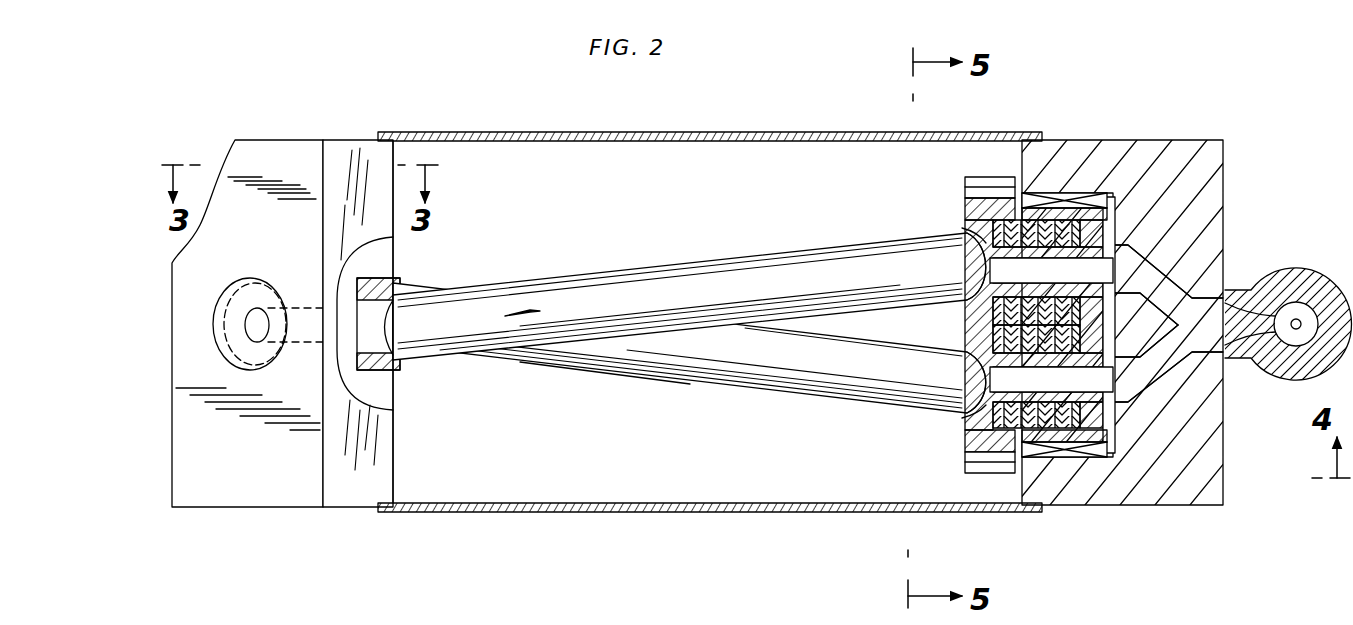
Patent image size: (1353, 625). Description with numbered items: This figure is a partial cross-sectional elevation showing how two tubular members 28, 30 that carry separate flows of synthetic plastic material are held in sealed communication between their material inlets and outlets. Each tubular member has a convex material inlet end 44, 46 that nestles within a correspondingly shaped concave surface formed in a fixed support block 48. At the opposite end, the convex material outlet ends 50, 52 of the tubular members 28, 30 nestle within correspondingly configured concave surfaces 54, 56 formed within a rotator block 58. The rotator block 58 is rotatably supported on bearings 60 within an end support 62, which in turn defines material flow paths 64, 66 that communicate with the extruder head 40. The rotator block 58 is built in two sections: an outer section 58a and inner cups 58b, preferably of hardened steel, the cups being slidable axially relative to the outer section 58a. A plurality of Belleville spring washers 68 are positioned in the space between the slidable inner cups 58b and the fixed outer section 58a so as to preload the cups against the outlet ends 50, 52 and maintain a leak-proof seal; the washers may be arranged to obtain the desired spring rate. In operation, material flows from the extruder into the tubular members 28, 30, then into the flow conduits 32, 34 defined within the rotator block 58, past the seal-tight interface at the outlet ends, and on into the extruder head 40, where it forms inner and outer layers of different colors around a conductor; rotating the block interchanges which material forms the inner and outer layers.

The tubular member 28 is at (800, 370).
The tubular member 30 is at (734, 303).
The synthetic material flow conduit 32 is at (1062, 392).
The synthetic material flow conduit 34 is at (1060, 284).
The extruder head 40 is at (1300, 278).
The material inlet end 44 is at (490, 357).
The material inlet end 46 is at (403, 297).
The fixed support block 48 is at (382, 433).
The material outlet end 50 is at (978, 390).
The material outlet end 52 is at (975, 276).
The concave surface 54 is at (962, 410).
The concave surface 56 is at (975, 238).
The rotator block 58 is at (1010, 485).
The outer section 58a is at (1093, 208).
The inner cups 58b is at (958, 216).
The bearings 60 is at (1063, 205).
The end support 62 is at (1167, 487).
The material flow path 64 is at (1187, 345).
The material flow path 66 is at (1180, 303).
The Belleville spring washers 68 is at (1013, 220).